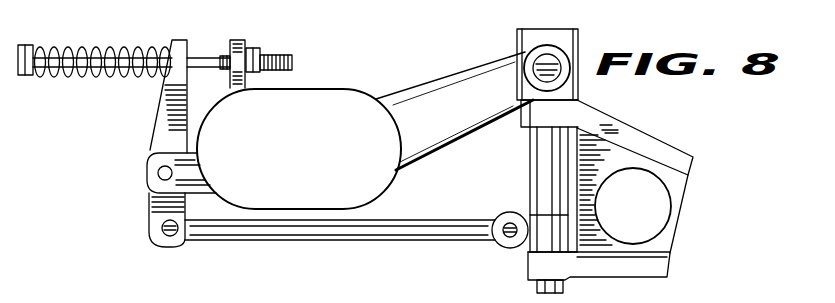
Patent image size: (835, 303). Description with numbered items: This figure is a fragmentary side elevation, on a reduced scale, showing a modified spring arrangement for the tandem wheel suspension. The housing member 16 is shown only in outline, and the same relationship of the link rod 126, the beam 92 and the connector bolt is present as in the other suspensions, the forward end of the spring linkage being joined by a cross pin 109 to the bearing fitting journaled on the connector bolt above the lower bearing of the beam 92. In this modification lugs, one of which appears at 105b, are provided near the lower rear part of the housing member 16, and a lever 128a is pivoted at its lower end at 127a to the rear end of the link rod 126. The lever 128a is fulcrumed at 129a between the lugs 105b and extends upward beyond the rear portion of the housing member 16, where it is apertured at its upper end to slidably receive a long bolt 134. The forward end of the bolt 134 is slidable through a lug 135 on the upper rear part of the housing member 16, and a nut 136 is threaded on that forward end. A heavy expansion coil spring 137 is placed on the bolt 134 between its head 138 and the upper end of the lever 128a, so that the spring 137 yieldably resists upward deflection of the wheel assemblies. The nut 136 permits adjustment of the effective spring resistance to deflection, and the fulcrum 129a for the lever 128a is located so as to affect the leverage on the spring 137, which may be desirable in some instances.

The housing member 16 is at (409, 84).
The beam 92 is at (628, 133).
The lug 105b is at (202, 182).
The cross pin 109 is at (510, 238).
The link rod 126 is at (373, 242).
The pivot 127a is at (170, 238).
The lever 128a is at (158, 213).
The fulcrum 129a is at (158, 178).
The long bolt 134 is at (203, 59).
The lug 135 is at (243, 42).
The nut 136 is at (261, 50).
The expansion coil spring 137 is at (105, 77).
The head 138 is at (30, 77).